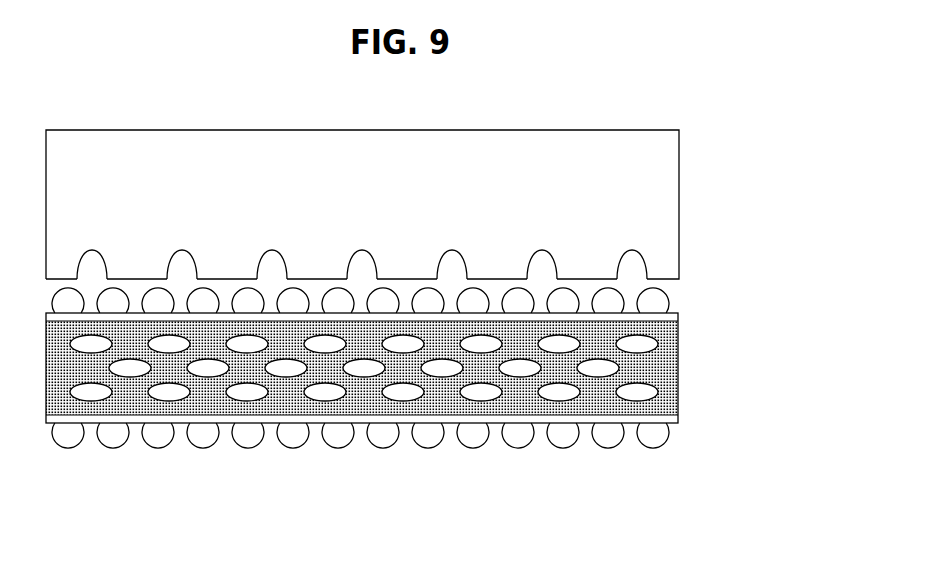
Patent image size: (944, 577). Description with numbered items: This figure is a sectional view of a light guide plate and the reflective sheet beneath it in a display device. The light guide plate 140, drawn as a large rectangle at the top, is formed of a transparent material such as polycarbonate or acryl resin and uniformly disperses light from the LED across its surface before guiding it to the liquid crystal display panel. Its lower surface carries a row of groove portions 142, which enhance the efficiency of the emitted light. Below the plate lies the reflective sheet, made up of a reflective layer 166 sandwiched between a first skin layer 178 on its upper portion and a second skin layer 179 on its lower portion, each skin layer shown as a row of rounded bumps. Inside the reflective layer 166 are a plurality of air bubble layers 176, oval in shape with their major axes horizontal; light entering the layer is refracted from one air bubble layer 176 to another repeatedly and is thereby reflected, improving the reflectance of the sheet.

The light guide plate 140 is at (645, 205).
The groove portions 142 is at (645, 265).
The first skin layer 178 is at (661, 302).
The air bubble layers 176 is at (642, 343).
The reflective layer 166 is at (657, 370).
The second skin layer 179 is at (657, 433).